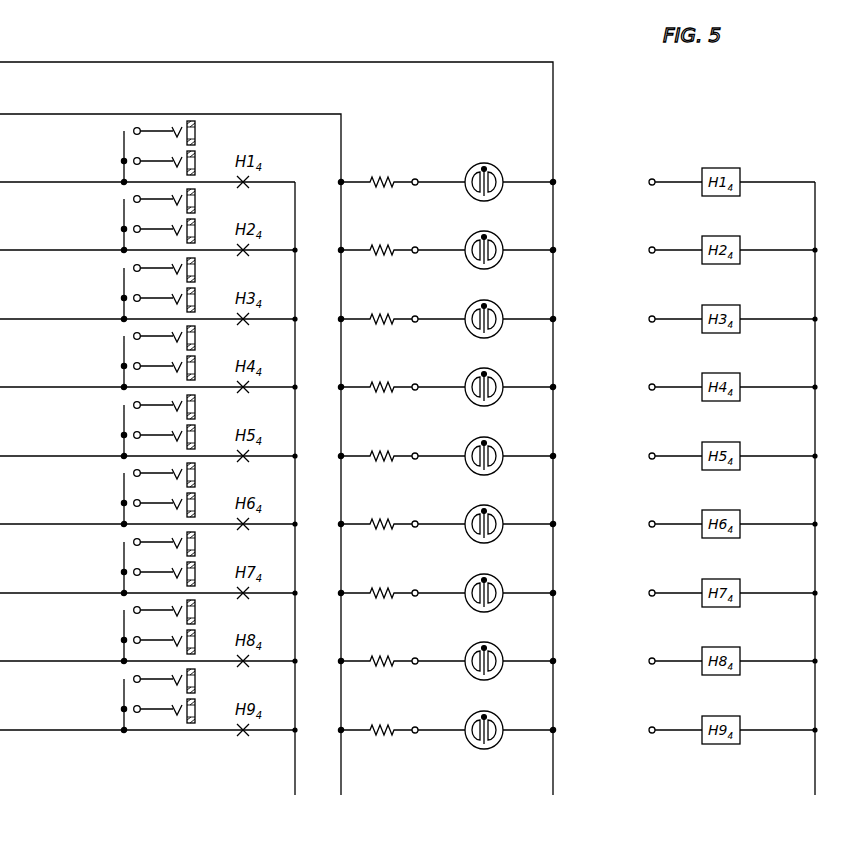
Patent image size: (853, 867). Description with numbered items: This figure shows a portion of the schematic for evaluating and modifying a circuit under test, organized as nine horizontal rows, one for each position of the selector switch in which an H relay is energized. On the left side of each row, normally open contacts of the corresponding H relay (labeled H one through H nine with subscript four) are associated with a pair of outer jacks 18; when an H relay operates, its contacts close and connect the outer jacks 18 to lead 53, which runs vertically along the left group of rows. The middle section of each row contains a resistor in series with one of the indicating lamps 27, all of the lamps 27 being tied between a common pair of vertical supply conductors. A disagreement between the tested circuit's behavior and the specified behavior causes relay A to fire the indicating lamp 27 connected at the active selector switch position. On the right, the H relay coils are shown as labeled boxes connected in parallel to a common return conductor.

The outer jacks 18 is at (203, 708).
The indicating lamps 27 is at (473, 746).
The lead 53 is at (295, 412).